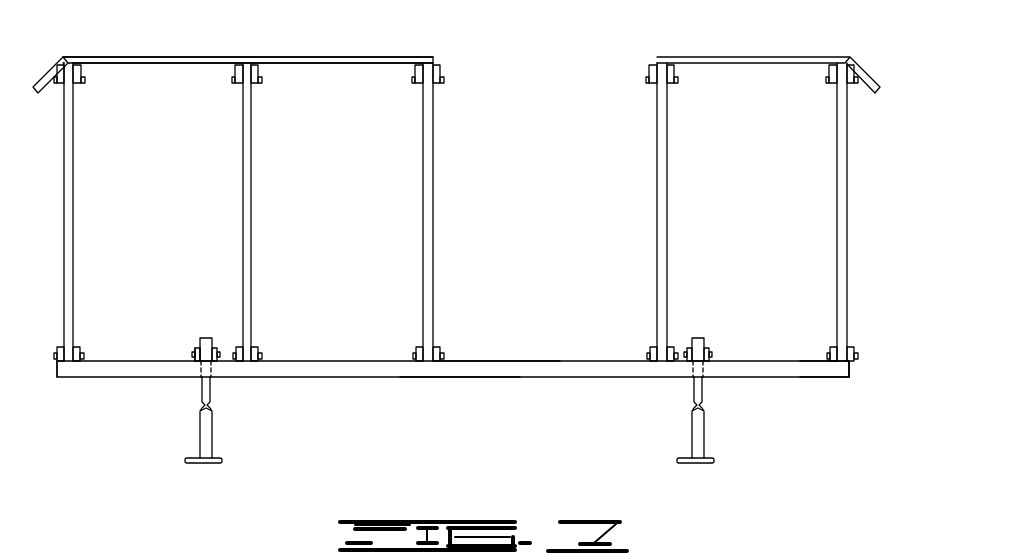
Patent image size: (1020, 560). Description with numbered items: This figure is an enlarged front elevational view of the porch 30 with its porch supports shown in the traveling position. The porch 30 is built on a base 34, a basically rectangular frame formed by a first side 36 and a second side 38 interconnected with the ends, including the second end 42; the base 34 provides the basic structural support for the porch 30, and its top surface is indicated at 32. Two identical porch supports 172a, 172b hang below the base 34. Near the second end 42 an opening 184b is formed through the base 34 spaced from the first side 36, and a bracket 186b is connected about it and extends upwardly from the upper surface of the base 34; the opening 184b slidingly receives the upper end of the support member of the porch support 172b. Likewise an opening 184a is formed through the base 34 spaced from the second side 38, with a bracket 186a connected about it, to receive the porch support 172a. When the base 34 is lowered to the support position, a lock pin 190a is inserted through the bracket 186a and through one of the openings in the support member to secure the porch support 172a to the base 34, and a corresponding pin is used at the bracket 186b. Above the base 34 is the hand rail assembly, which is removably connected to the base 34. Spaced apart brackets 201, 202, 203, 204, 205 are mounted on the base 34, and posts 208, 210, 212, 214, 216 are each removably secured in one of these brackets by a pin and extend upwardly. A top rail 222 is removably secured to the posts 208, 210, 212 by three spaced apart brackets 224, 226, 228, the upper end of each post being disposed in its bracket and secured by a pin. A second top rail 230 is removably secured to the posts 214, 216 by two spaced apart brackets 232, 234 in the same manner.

The porch 30 is at (383, 383).
The deck top surface 32 is at (495, 358).
The base 34 is at (840, 373).
The first side 36 is at (850, 375).
The second side 38 is at (57, 373).
The second end 42 is at (457, 373).
The porch support 172a is at (213, 430).
The porch support 172b is at (691, 430).
The opening 184a is at (200, 377).
The opening 184b is at (707, 358).
The bracket 186a is at (214, 360).
The bracket 186b is at (688, 358).
The lock pin 190a is at (196, 358).
The bracket 201 is at (75, 358).
The bracket 202 is at (253, 360).
The bracket 203 is at (415, 352).
The bracket 204 is at (655, 352).
The bracket 205 is at (849, 358).
The post 208 is at (72, 157).
The post 210 is at (252, 135).
The post 212 is at (433, 155).
The post 214 is at (658, 167).
The post 216 is at (838, 170).
The top rail 222 is at (284, 57).
The bracket 224 is at (83, 78).
The bracket 226 is at (238, 72).
The bracket 228 is at (438, 72).
The top rail 230 is at (710, 56).
The bracket 232 is at (655, 72).
The bracket 234 is at (832, 72).